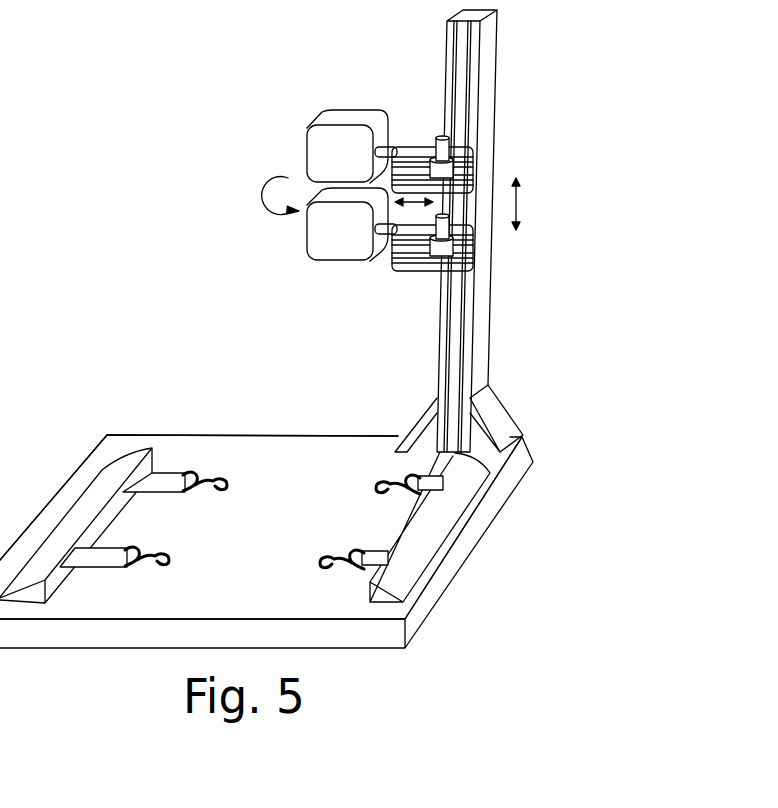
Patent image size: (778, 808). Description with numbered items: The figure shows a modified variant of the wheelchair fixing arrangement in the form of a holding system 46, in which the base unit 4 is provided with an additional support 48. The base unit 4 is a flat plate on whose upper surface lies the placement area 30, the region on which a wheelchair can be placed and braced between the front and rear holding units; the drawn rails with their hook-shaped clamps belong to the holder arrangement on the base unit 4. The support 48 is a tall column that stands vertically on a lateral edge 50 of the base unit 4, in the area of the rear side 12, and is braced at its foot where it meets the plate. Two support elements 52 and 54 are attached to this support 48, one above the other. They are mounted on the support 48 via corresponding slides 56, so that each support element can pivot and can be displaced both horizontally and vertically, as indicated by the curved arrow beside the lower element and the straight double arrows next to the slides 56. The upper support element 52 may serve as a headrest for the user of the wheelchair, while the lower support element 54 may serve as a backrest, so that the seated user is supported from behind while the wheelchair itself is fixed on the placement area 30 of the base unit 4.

The base unit 4 is at (207, 454).
The rear side 12 is at (514, 513).
The placement area 30 is at (302, 526).
The holding system 46 is at (356, 181).
The support 48 is at (483, 329).
The lateral edge 50 is at (293, 424).
The upper support element 52 is at (327, 142).
The lower support element 54 is at (318, 240).
The slides 56 is at (464, 230).